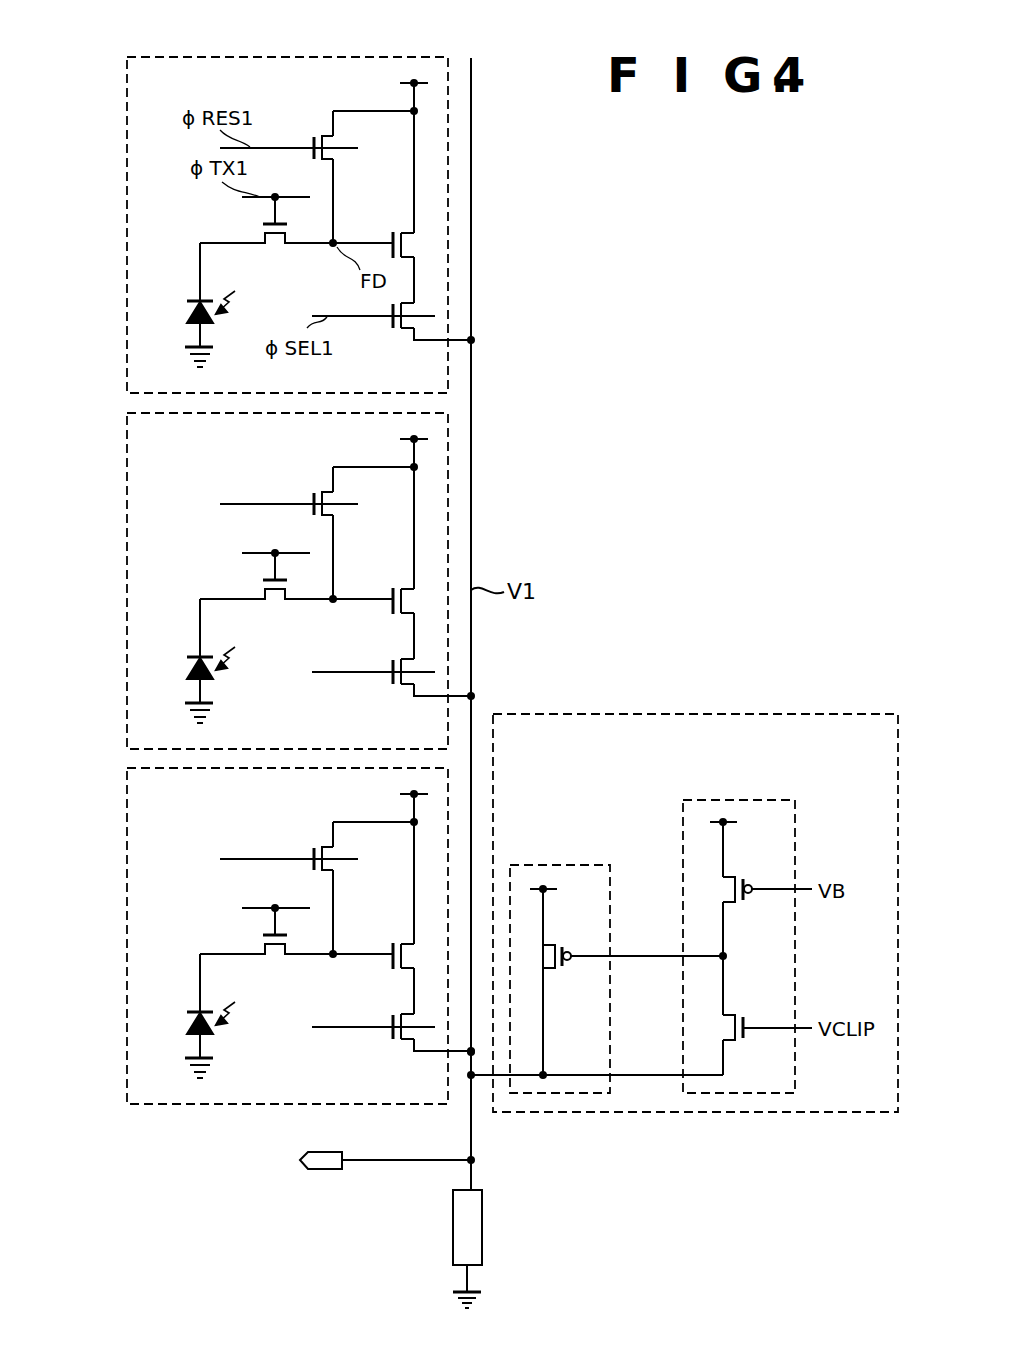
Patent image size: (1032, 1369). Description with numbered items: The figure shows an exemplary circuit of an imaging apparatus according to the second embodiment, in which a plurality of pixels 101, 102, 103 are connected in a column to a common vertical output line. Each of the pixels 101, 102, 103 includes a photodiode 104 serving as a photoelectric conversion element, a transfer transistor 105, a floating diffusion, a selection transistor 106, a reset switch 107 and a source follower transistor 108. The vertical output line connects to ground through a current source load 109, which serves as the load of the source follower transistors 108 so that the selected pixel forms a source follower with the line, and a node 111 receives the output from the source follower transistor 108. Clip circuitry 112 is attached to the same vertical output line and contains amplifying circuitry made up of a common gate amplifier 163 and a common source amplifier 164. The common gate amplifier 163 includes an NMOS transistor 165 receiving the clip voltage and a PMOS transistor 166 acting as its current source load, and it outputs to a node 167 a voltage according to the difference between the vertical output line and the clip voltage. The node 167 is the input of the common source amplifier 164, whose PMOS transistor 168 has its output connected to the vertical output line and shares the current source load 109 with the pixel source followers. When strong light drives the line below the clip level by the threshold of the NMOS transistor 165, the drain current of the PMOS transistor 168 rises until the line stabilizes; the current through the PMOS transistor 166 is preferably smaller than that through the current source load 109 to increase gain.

The pixel 101 is at (127, 85).
The pixel 102 is at (124, 441).
The pixel 103 is at (122, 796).
The photodiode 104 is at (187, 307).
The transfer transistor 105 is at (260, 231).
The selection transistor 106 is at (398, 333).
The reset switch 107 is at (313, 135).
The source follower transistor 108 is at (393, 232).
The current source load 109 is at (483, 1227).
The node 111 is at (323, 1173).
The clip circuitry 112 is at (848, 714).
The common gate amplifier 163 is at (762, 800).
The common source amplifier 164 is at (575, 865).
The NMOS transistor 165 is at (743, 1014).
The PMOS transistor 166 is at (743, 876).
The node 167 is at (642, 955).
The PMOS transistor 168 is at (562, 947).